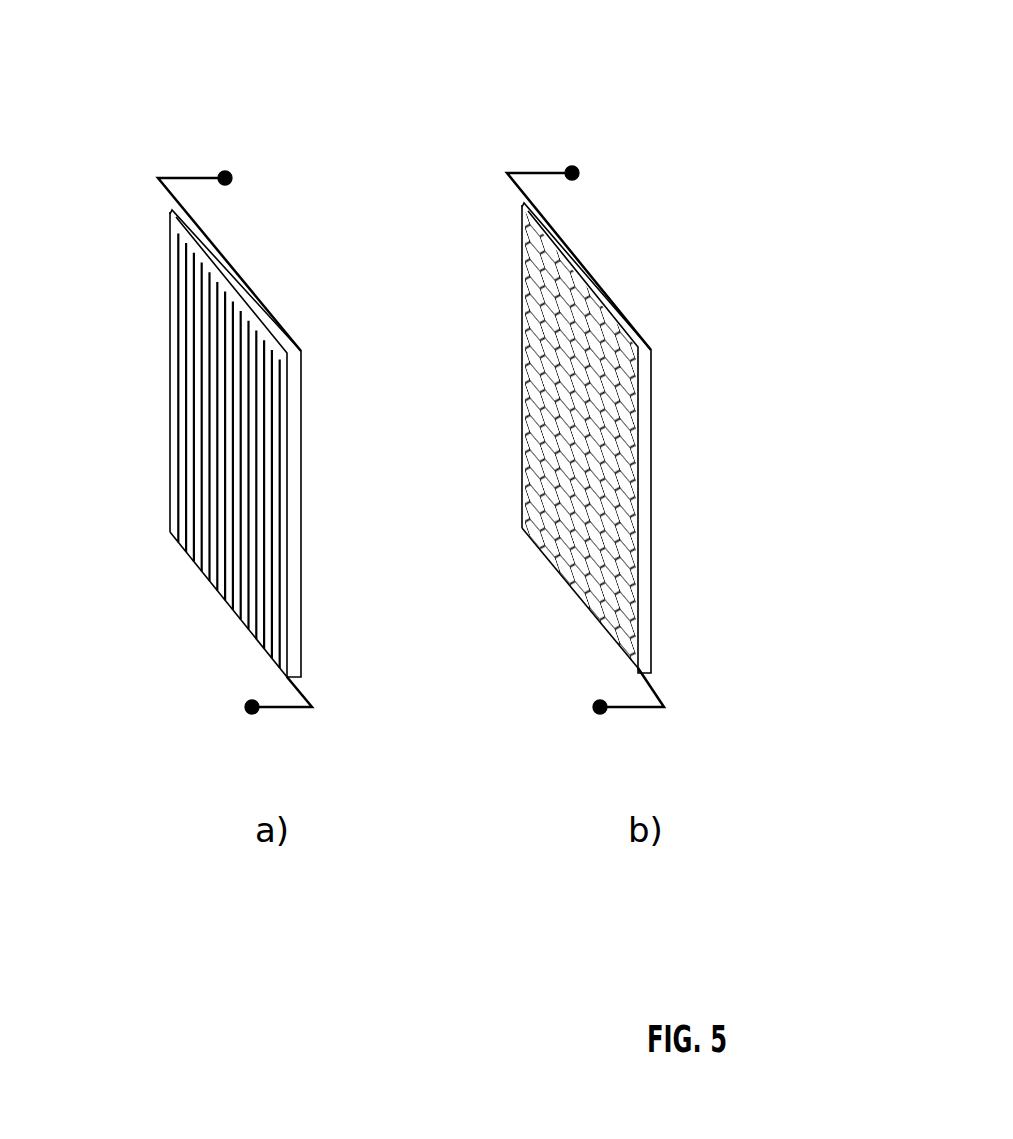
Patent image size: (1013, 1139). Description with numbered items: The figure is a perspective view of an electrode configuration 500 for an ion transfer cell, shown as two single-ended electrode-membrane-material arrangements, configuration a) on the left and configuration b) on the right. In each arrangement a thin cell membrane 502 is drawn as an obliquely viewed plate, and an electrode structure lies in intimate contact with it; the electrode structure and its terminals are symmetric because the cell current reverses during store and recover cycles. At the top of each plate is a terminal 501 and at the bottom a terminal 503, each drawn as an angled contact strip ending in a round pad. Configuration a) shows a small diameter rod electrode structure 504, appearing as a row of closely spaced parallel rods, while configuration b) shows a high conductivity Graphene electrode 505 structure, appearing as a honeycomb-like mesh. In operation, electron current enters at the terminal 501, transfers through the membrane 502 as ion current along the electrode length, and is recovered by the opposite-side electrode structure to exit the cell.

The electrode structure 500 is at (565, 86).
The terminal 501 is at (572, 173).
The cell membrane 502 is at (567, 258).
The terminal 503 is at (600, 712).
The small diameter rod electrode structure 504 is at (210, 432).
The high conductivity Graphene electrode structure 505 is at (540, 410).